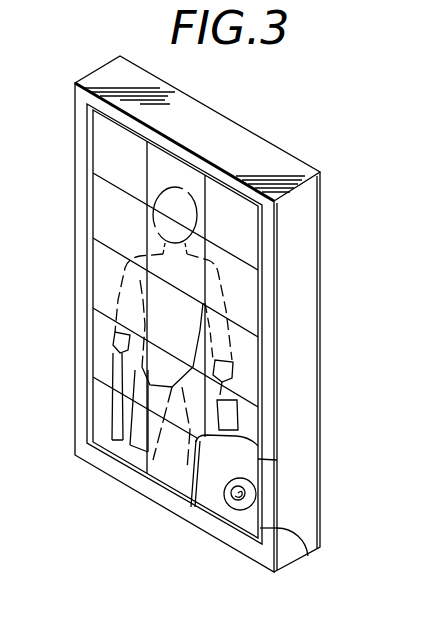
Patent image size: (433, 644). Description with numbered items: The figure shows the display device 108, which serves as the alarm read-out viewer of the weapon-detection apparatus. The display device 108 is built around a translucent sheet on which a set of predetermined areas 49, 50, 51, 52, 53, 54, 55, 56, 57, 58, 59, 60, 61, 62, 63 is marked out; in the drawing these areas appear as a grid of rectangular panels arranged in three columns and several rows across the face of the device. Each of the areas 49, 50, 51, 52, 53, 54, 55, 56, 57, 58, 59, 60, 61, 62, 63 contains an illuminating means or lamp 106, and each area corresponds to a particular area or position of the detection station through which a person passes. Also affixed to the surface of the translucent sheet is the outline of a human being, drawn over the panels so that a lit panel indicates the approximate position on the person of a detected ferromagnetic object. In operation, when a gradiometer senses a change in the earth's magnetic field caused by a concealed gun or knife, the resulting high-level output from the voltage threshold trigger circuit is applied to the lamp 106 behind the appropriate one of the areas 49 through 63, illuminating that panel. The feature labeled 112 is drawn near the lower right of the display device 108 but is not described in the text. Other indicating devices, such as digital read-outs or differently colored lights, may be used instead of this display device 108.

The predetermined area 49 is at (120, 157).
The predetermined area 50 is at (182, 171).
The predetermined area 51 is at (231, 273).
The predetermined area 52 is at (120, 221).
The predetermined area 53 is at (176, 255).
The predetermined area 54 is at (240, 302).
The predetermined area 55 is at (103, 274).
The predetermined area 56 is at (176, 322).
The predetermined area 57 is at (243, 362).
The predetermined area 58 is at (100, 350).
The predetermined area 59 is at (166, 398).
The predetermined area 60 is at (250, 428).
The predetermined area 61 is at (115, 440).
The predetermined area 62 is at (170, 468).
The predetermined area 63 is at (224, 472).
The illuminating means or lamp 106 is at (302, 560).
The display device 108 is at (285, 149).
The slot 112 is at (277, 460).